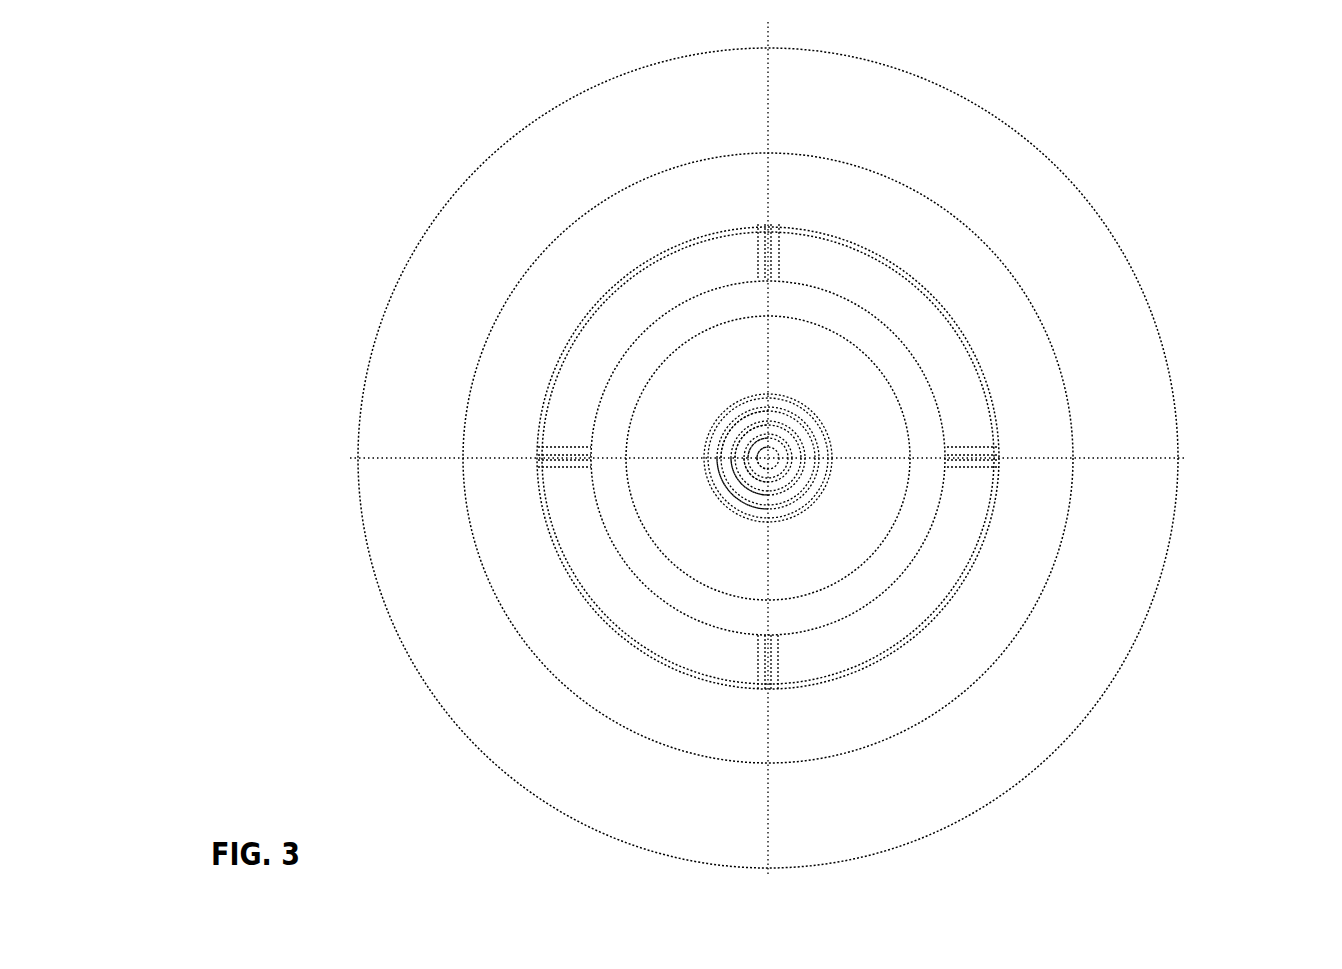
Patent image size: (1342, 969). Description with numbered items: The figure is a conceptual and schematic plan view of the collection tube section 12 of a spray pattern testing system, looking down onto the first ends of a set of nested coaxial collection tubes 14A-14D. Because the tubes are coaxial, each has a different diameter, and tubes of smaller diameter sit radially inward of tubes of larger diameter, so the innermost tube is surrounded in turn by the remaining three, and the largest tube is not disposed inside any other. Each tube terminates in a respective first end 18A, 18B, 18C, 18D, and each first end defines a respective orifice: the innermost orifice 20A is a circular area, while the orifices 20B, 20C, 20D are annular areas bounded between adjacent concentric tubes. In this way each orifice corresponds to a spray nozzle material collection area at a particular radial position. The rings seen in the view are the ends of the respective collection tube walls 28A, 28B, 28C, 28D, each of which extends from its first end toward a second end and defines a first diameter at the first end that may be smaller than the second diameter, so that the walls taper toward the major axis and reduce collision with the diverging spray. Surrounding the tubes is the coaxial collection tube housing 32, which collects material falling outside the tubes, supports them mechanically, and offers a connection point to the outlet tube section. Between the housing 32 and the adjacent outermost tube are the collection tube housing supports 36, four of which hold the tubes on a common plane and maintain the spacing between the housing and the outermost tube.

The collection tube section 12 is at (1226, 110).
The coaxial collection tubes 14A-14D is at (841, 466).
The first end of coaxial collection tube 14A 18A is at (774, 445).
The first end of coaxial collection tube 14B 18B is at (790, 444).
The first end of coaxial collection tube 14C 18C is at (810, 441).
The first end of coaxial collection tube 14D 18D is at (832, 443).
The orifice 20A is at (767, 460).
The orifice 20B is at (753, 460).
The orifice 20C is at (738, 460).
The orifice 20D is at (720, 460).
The collection tube wall 28A is at (768, 463).
The collection tube wall 28B is at (757, 474).
The collection tube wall 28C is at (732, 476).
The collection tube wall 28D is at (714, 475).
The coaxial collection tube housing 32 is at (862, 351).
The collection tube housing supports 36 is at (768, 228).